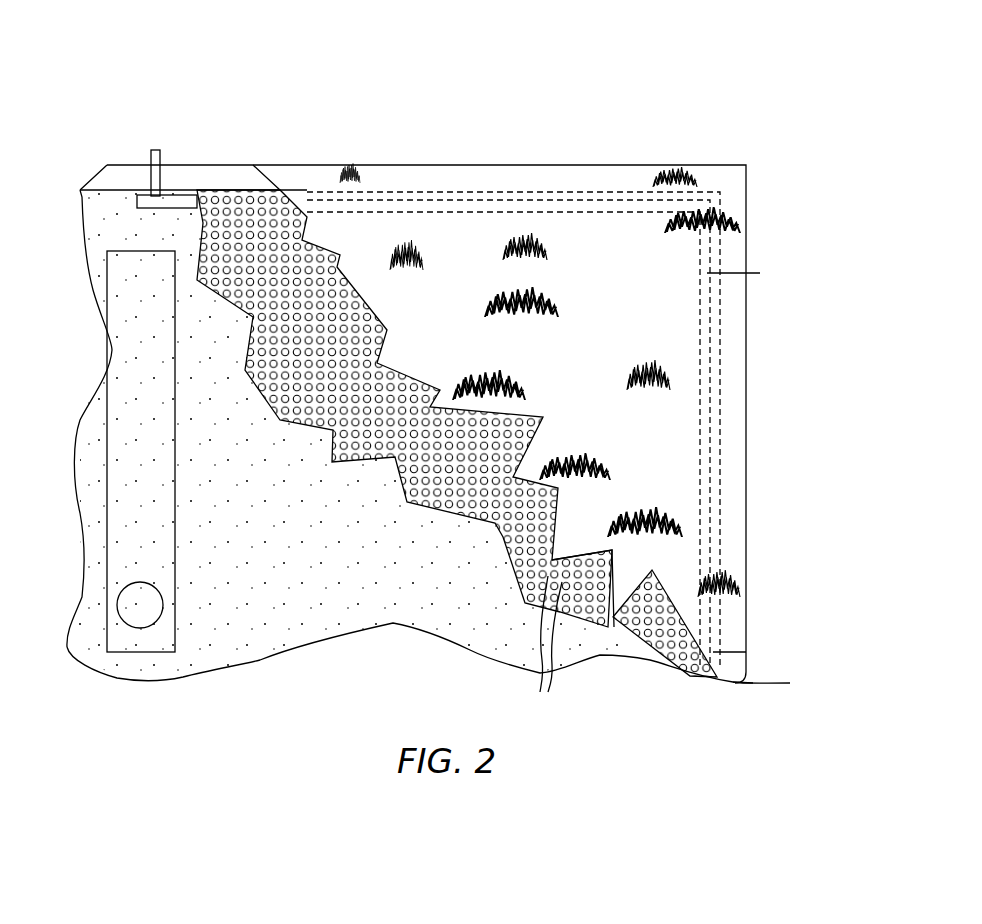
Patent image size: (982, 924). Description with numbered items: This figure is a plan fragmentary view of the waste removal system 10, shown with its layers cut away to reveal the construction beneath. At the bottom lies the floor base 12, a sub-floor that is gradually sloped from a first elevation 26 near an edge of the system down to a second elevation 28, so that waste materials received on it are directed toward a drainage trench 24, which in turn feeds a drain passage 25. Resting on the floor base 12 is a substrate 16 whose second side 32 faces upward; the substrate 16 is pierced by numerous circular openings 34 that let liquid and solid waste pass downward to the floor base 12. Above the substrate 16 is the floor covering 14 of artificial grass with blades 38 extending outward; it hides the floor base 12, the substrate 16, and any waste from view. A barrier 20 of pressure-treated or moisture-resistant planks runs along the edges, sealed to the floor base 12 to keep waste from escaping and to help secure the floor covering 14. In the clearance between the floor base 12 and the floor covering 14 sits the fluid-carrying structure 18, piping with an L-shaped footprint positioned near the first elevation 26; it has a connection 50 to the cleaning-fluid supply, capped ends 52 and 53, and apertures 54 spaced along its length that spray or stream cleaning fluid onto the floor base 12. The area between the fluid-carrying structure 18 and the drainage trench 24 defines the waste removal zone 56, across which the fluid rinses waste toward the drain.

The waste removal system 10 is at (687, 108).
The floor base 12 is at (343, 592).
The floor covering 14 is at (575, 236).
The substrate 16 is at (616, 630).
The fluid-carrying structure 18 is at (178, 192).
The barrier 20 is at (227, 178).
The drainage trench 24 is at (105, 393).
The drain passage 25 is at (119, 593).
The first elevation 26 is at (666, 655).
The second elevation 28 is at (200, 605).
The second side 32 is at (503, 537).
The openings 34 is at (544, 644).
The blades 38 is at (405, 248).
The connection 50 is at (155, 150).
The end 52 is at (137, 201).
The end 53 is at (773, 682).
The apertures 54 is at (760, 274).
The waste removal zone 56 is at (257, 573).